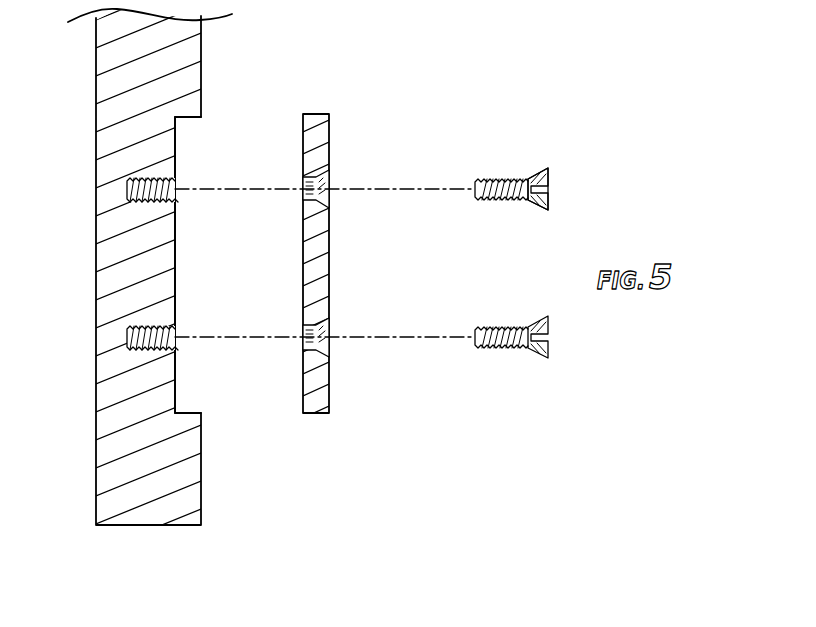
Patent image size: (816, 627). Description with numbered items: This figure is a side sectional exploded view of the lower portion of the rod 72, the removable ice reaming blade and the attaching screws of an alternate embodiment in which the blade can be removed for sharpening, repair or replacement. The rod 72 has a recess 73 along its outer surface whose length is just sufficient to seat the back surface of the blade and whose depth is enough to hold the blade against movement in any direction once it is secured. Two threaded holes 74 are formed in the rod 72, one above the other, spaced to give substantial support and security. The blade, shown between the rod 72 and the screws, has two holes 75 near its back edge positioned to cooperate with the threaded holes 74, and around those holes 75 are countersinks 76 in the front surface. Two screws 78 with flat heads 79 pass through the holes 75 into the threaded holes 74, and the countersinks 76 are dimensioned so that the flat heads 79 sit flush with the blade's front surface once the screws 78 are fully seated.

The rod 72 is at (130, 458).
The recess 73 is at (185, 123).
The threaded holes 74 is at (176, 340).
The holes 75 is at (305, 182).
The countersinks 76 is at (322, 345).
The screws 78 is at (548, 175).
The flat heads 79 is at (548, 200).